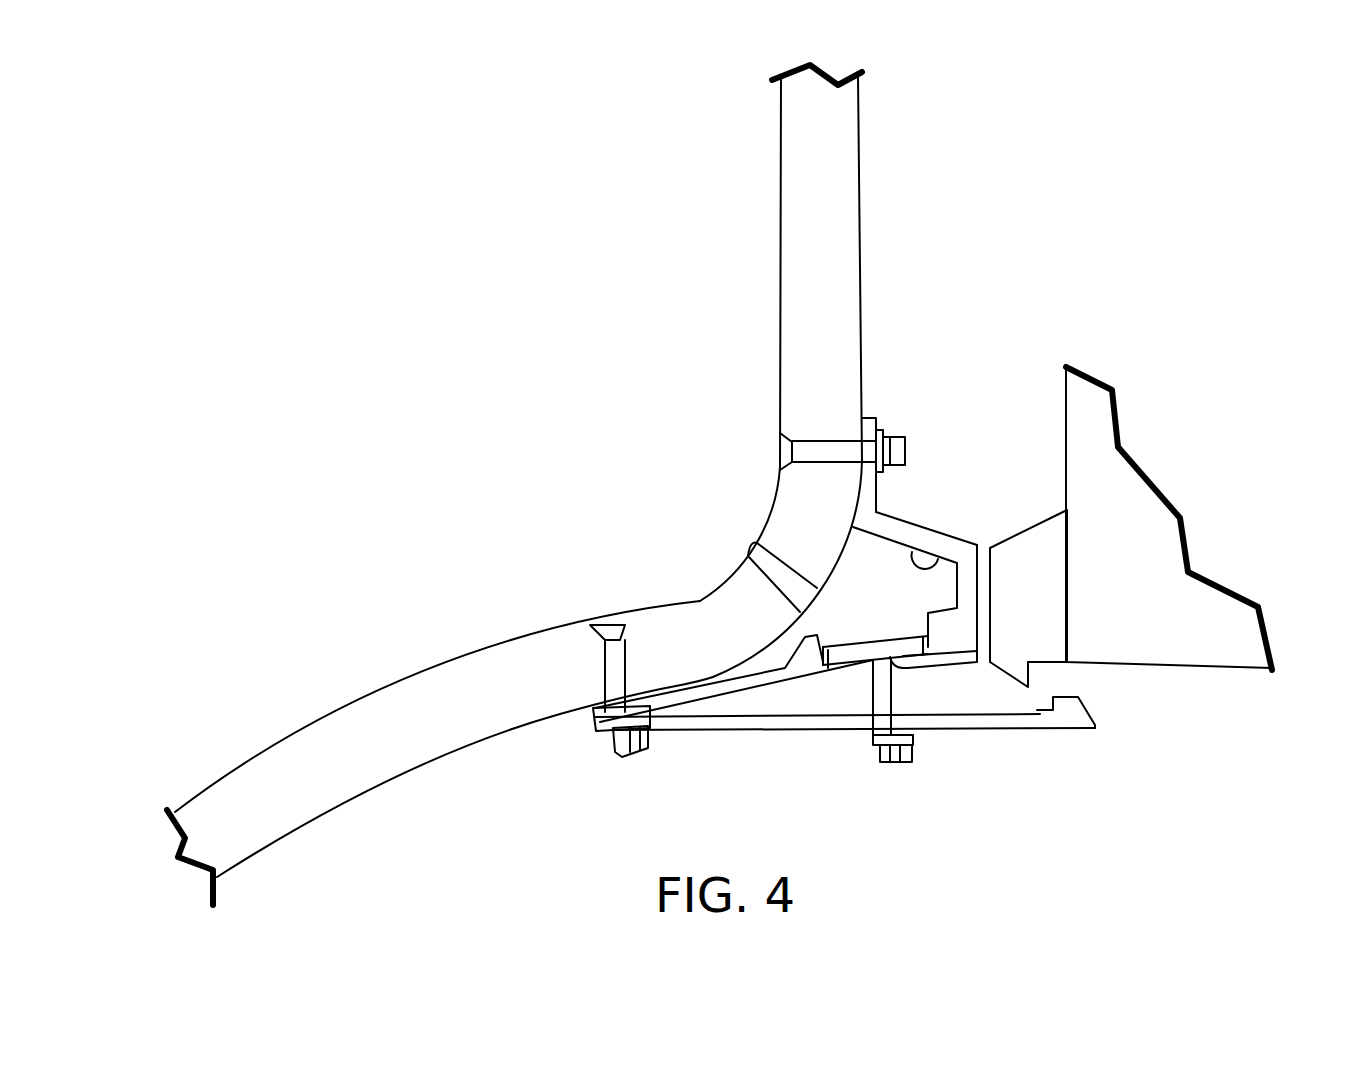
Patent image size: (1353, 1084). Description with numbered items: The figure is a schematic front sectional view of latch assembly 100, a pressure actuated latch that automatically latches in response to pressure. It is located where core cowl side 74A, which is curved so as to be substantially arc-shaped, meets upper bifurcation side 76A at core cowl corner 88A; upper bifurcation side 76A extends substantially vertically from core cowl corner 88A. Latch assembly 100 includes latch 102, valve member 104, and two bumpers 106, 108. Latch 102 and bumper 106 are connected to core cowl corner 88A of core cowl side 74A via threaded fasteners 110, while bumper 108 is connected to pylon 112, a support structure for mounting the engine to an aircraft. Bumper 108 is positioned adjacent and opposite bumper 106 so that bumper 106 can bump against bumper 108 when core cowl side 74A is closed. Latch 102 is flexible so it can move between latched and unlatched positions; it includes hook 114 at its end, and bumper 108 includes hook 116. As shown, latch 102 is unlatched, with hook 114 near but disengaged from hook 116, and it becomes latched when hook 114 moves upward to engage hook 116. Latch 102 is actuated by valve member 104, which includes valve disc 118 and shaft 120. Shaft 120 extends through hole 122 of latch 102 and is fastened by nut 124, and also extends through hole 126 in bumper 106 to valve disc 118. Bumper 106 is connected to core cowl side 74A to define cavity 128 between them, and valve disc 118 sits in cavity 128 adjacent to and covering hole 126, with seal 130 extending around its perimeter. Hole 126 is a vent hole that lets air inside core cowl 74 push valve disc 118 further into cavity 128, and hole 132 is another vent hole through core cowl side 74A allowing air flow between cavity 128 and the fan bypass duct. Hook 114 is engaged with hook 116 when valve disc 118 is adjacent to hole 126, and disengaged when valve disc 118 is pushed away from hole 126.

The core cowl 74 is at (200, 690).
The core cowl side 74A is at (340, 697).
The upper bifurcation side 76A is at (779, 187).
The core cowl corner 88A is at (672, 612).
The latch assembly 100 is at (937, 633).
The latch 102 is at (975, 738).
The valve member 104 is at (860, 694).
The bumper 106 is at (936, 518).
The bumper 108 is at (1030, 513).
The threaded fasteners 110 is at (780, 447).
The pylon 112 is at (1200, 670).
The hook 114 is at (1040, 712).
The hook 116 is at (1035, 668).
The valve disc 118 is at (818, 664).
The shaft 120 is at (878, 733).
The hole 122 is at (906, 764).
The nut 124 is at (897, 757).
The hole 126 is at (905, 662).
The cavity 128 is at (960, 540).
The seal 130 is at (826, 648).
The hole 132 is at (765, 560).